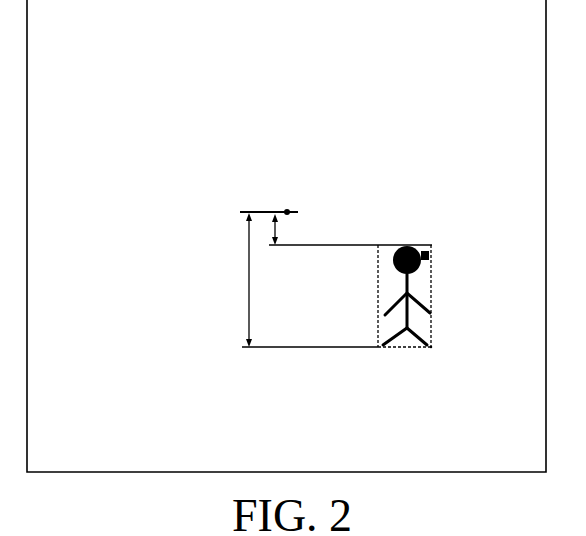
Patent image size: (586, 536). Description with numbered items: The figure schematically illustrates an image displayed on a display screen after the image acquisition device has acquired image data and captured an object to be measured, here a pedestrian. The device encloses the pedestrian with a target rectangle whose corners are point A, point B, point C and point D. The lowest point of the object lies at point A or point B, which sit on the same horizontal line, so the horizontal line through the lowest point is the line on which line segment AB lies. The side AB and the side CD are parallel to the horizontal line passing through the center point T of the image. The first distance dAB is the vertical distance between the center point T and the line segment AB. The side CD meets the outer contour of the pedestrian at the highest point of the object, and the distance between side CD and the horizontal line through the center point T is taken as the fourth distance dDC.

The center point of the image T is at (287, 209).
The point A is at (394, 345).
The point B is at (440, 345).
The point C is at (440, 280).
The point D is at (369, 280).
The first distance dAB is at (236, 280).
The fourth distance dDC is at (287, 229).